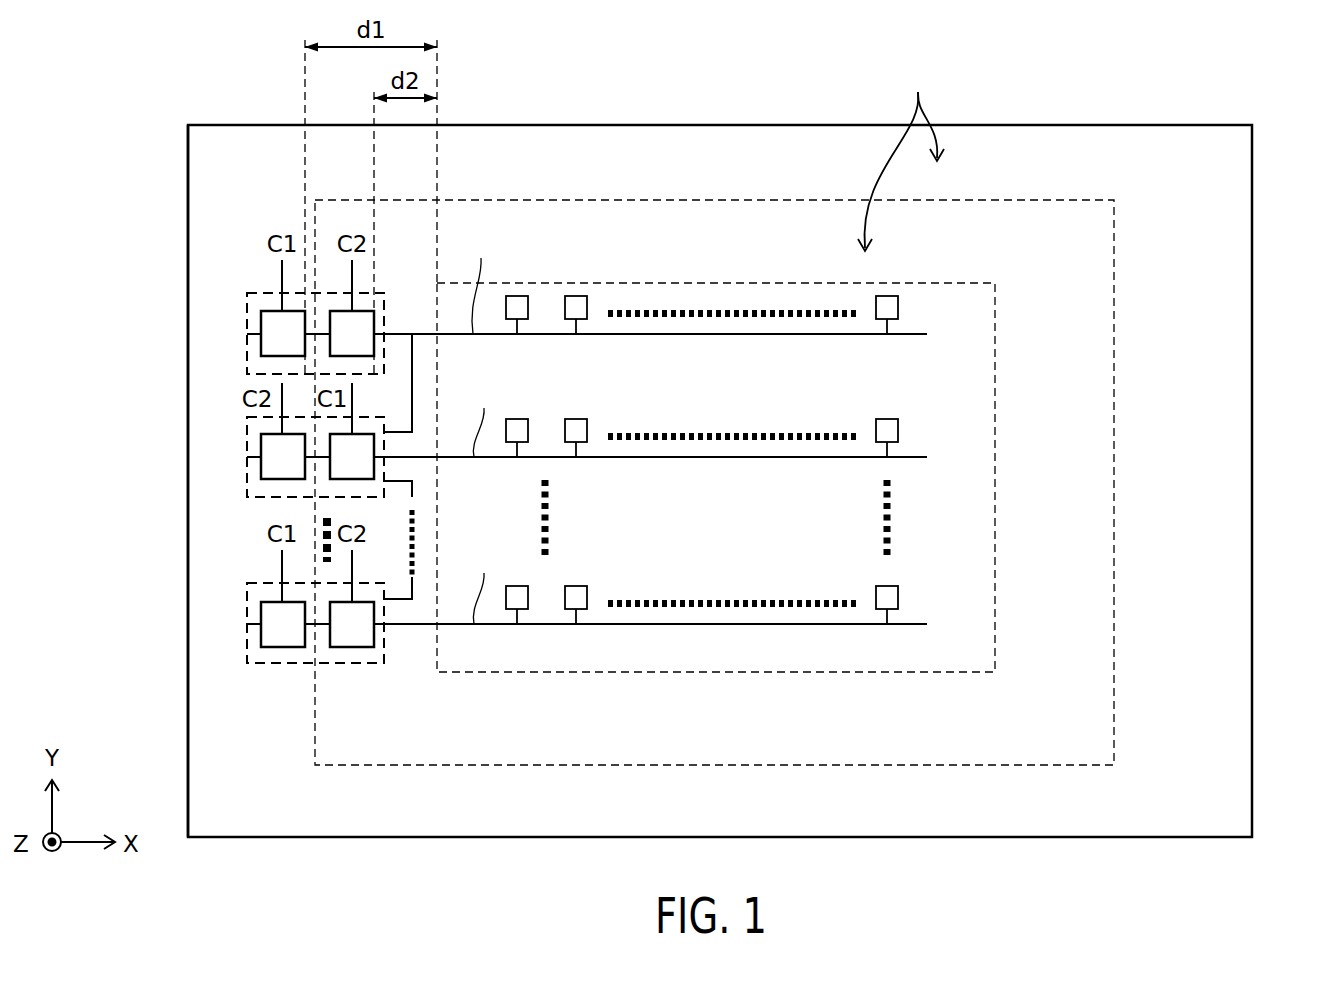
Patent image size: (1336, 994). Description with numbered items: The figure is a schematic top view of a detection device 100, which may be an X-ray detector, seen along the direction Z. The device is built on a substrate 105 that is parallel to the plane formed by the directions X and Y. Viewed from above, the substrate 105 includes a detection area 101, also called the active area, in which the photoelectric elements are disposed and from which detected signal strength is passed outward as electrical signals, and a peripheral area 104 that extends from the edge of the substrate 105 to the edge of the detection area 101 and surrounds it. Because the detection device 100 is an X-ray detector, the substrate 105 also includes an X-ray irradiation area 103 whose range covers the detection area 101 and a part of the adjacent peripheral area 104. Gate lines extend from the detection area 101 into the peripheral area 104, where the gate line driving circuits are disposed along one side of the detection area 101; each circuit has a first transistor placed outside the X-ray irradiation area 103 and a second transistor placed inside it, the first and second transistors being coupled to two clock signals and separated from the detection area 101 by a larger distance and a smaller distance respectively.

The detection device 100 is at (1282, 838).
The detection area 101 is at (940, 283).
The X-ray irradiation area 103 is at (1075, 200).
The peripheral area 104 is at (901, 156).
The substrate 105 is at (1207, 125).